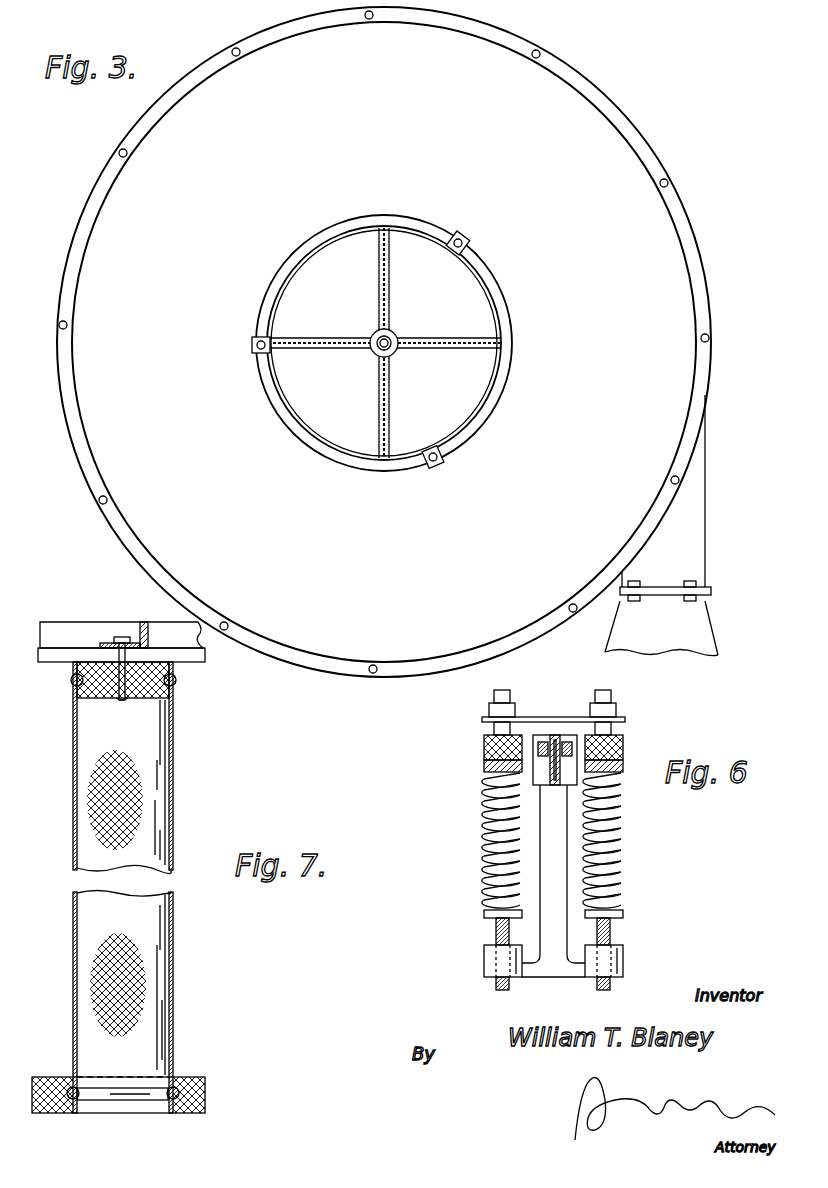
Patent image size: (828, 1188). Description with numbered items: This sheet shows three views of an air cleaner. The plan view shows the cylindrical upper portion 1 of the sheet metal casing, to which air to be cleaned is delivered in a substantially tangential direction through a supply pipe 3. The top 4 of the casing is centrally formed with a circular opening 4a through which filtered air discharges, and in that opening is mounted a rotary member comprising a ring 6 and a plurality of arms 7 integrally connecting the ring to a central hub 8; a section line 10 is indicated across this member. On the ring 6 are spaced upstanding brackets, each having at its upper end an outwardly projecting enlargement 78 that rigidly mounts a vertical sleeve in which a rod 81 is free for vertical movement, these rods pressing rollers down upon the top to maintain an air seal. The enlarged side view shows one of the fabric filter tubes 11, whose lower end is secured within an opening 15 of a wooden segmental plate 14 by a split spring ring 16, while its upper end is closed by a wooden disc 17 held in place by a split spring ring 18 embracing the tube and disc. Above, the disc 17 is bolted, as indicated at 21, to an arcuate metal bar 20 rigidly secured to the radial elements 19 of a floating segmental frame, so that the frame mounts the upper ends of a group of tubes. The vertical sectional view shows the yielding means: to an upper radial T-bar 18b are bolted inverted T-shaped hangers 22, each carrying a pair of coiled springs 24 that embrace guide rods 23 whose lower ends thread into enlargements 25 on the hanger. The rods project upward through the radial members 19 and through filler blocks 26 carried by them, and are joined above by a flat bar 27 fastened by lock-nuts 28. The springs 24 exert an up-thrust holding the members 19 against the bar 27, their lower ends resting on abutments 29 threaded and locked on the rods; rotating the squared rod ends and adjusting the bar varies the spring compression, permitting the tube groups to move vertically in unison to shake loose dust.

In FIG. 3, the cylindrical upper portion of casing 1 is at (712, 300).
In FIG. 3, the supply pipe 3 is at (700, 543).
In FIG. 3, the top of casing 4 is at (143, 358).
In FIG. 3, the circular opening 4a is at (336, 393).
In FIG. 3, the ring 6 is at (500, 283).
In FIG. 3, the arms 7 is at (391, 297).
In FIG. 3, the central hub 8 is at (395, 352).
In FIG. 3, the section line 10 is at (235, 364).
In FIG. 3, the outwardly projecting enlargement 78 is at (463, 240).
In FIG. 3, the rod 81 is at (469, 243).
In FIG. 7, the fabric filter tubes 11 is at (175, 993).
In FIG. 7, the segmental plates 14 is at (206, 1096).
In FIG. 7, the openings 15 is at (100, 1110).
In FIG. 7, the split spring rings 16 is at (163, 1108).
In FIG. 7, the discs 17 is at (172, 693).
In FIG. 7, the split spring rings 18 is at (178, 679).
In FIG. 6, the T-bars 18b is at (556, 735).
In FIG. 7, the radial elements 19 is at (78, 632).
In FIG. 6, the radial elements 19 is at (624, 748).
In FIG. 7, the arcuate metal bars 20 is at (150, 634).
In FIG. 7, the bolts 21 is at (121, 636).
In FIG. 6, the hangers 22 is at (550, 862).
In FIG. 6, the guide rods 23 is at (620, 874).
In FIG. 6, the coiled springs 24 is at (484, 825).
In FIG. 6, the enlargements 25 is at (624, 958).
In FIG. 6, the filler blocks 26 is at (527, 745).
In FIG. 6, the flat bar 27 is at (520, 735).
In FIG. 6, the lock-nuts 28 is at (612, 712).
In FIG. 6, the abutments 29 is at (624, 917).